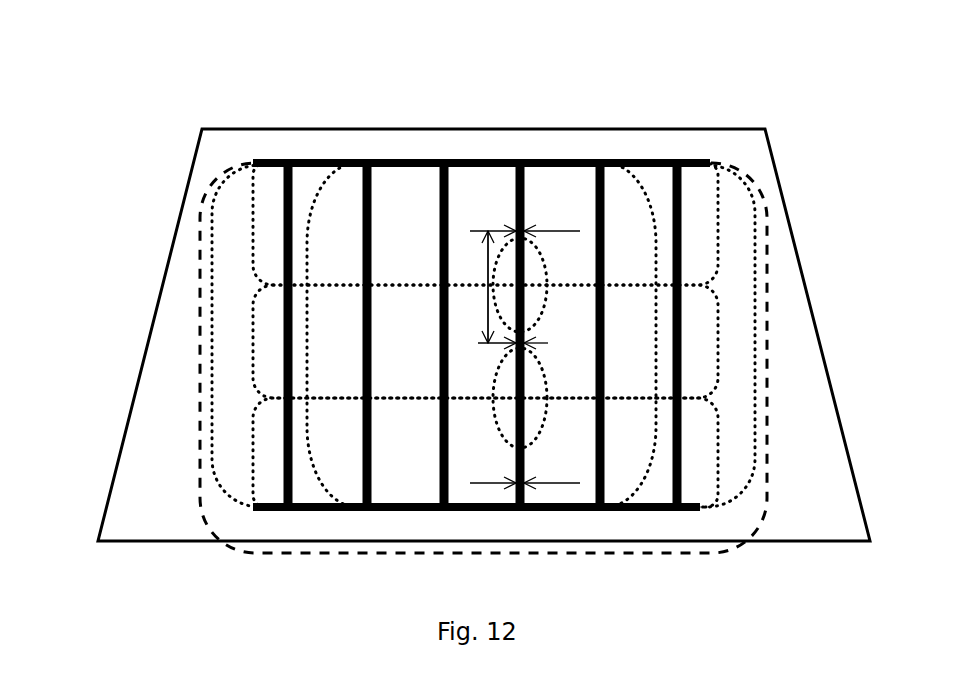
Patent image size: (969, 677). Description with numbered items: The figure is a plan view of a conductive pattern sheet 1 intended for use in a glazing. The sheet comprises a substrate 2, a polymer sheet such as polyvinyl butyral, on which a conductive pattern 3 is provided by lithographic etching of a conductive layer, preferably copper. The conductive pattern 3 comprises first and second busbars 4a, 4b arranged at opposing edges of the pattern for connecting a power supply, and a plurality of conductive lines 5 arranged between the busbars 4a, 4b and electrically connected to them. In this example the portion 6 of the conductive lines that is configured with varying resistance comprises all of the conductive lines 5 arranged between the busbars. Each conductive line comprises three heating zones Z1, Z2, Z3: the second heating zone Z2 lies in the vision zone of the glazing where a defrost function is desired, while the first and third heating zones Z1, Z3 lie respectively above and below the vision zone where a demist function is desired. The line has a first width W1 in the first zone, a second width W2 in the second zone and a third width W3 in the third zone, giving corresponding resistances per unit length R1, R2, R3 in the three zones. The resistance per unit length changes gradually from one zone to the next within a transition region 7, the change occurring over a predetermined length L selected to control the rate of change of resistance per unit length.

The conductive pattern sheet 1 is at (458, 288).
The substrate 2 is at (383, 128).
The conductive pattern 3 is at (200, 205).
The first busbar 4a is at (252, 163).
The second busbar 4b is at (250, 507).
The plurality of conductive lines 5 is at (210, 263).
The portion of the plurality of conductive lines 6 is at (322, 195).
The transition region 7 is at (552, 398).
The first heating zone Z1 is at (252, 222).
The second heating zone Z2 is at (255, 342).
The third heating zone Z3 is at (252, 452).
The resistance per unit length of line in first heating zone R1 is at (525, 178).
The resistance per unit length of line in second heating zone R2 is at (522, 343).
The resistance per unit length of line in third heating zone R3 is at (552, 510).
The width of line in first heating zone W1 is at (525, 216).
The width of line in second heating zone W2 is at (530, 345).
The width of line in third heating zone W3 is at (525, 468).
The length of transition region L is at (475, 287).